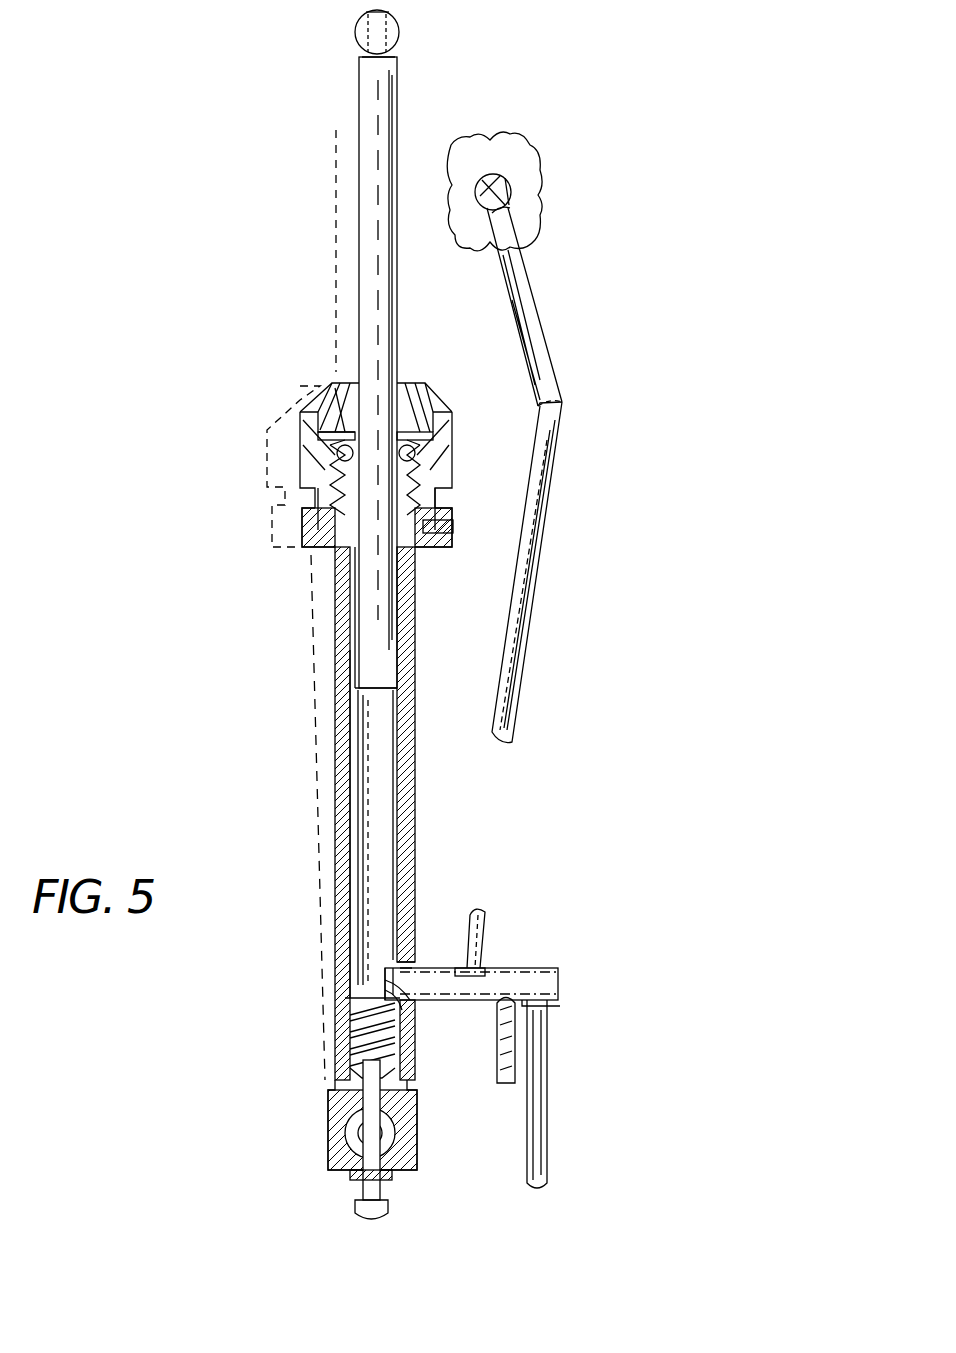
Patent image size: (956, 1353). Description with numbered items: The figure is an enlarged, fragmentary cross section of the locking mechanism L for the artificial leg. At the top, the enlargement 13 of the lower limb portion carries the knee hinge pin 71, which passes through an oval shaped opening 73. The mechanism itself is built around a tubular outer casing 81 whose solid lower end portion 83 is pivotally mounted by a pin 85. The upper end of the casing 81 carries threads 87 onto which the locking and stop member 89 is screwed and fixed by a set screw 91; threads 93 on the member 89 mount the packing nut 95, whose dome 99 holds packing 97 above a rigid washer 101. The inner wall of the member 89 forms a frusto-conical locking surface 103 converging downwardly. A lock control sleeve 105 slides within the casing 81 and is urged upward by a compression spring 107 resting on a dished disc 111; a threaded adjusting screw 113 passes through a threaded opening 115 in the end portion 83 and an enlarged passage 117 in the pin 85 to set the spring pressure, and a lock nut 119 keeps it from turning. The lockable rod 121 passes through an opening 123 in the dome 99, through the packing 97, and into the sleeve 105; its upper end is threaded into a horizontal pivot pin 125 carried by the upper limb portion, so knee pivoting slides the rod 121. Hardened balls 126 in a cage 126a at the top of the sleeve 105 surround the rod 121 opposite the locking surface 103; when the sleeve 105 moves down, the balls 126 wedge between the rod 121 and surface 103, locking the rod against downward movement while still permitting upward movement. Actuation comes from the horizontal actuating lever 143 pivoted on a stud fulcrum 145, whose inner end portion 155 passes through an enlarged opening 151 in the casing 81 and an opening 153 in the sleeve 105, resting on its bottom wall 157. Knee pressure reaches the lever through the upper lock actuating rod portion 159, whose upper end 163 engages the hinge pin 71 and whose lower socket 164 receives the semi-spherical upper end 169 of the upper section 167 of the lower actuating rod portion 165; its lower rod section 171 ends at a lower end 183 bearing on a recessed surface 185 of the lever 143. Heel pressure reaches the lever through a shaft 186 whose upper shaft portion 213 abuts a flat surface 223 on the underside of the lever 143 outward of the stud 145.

The enlargement 13 is at (533, 160).
The knee hinge pin 71 is at (486, 180).
The oval shaped opening 73 is at (513, 190).
The tubular outer casing 81 is at (408, 712).
The solid lower end portion 83 is at (332, 1108).
The pin 85 is at (346, 1137).
The threads 87 is at (322, 545).
The locking and stop member 89 is at (453, 488).
The set screw 91 is at (454, 526).
The threads 93 is at (455, 453).
The packing nut 95 is at (452, 425).
The packing 97 is at (340, 405).
The dome 99 is at (342, 388).
The rigid washer 101 is at (322, 436).
The frusto-conical locking surface 103 is at (438, 390).
The lock control sleeve 105 is at (398, 742).
The compression spring 107 is at (342, 1008).
The dished disc 111 is at (338, 1055).
The threaded adjusting screw 113 is at (362, 1188).
The threaded opening 115 is at (382, 1092).
The enlarged passage 117 is at (398, 1130).
The lock nut 119 is at (392, 1180).
The lockable rod 121 is at (365, 296).
The opening 123 is at (368, 385).
The horizontal pivot pin 125 is at (400, 38).
The hardened balls 126 is at (338, 462).
The cage 126a is at (336, 450).
The actuating lever 143 is at (558, 972).
The stud fulcrum 145 is at (494, 1060).
The enlarged opening 151 is at (410, 965).
The opening 153 is at (388, 965).
The inner end portion 155 is at (410, 1002).
The bottom wall 157 is at (404, 1012).
The upper lock actuating rod portion 159 is at (522, 288).
The upper end 163 is at (520, 228).
The socket 164 is at (556, 400).
The lower actuating rod portion 165 is at (530, 612).
The upper section 167 is at (544, 540).
The upper end 169 is at (560, 420).
The lower rod section 171 is at (478, 920).
The lower end 183 is at (485, 968).
The recessed surface 185 is at (485, 937).
The shaft 186 is at (548, 1090).
The upper shaft portion 213 is at (545, 1148).
The flat surface 223 is at (548, 1006).
The locking mechanism L is at (427, 691).